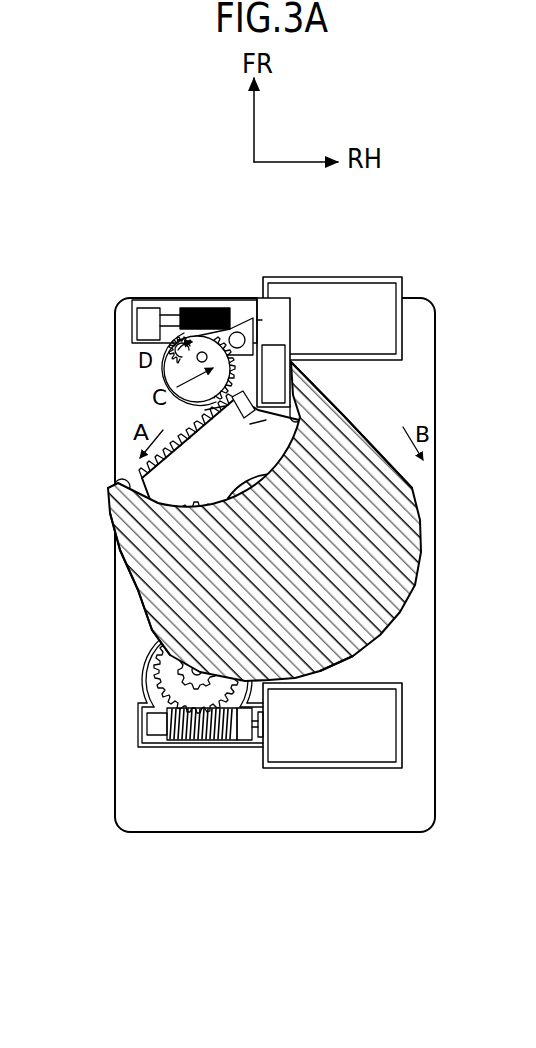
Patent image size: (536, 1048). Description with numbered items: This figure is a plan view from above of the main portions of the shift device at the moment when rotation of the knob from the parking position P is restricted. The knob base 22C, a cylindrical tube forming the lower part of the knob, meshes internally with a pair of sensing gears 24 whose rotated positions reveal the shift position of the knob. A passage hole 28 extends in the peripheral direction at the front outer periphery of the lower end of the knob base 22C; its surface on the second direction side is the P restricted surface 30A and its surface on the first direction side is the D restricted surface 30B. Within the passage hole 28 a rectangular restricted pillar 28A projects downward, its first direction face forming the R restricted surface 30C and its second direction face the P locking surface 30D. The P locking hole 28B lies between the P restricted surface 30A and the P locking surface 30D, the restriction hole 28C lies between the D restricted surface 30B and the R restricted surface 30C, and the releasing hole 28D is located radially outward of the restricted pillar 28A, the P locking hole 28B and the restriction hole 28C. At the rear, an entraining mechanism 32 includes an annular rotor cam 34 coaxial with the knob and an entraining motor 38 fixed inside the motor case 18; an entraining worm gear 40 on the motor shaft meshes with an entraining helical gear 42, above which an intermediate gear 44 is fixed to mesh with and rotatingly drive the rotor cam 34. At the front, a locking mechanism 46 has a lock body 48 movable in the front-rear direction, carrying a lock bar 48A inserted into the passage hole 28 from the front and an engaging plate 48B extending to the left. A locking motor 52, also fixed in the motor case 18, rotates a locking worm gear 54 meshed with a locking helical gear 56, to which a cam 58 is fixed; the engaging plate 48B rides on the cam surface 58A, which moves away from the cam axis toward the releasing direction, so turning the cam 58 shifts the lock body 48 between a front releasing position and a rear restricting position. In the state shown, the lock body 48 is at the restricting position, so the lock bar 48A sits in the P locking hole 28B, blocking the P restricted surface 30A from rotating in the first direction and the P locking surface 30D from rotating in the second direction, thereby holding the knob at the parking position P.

The motor case 18 is at (285, 832).
The locking motor 52 is at (380, 290).
The entraining motor 38 is at (360, 745).
The entraining mechanism 32 is at (167, 721).
The entraining worm gear 40 is at (185, 747).
The entraining helical gear 42 is at (160, 660).
The intermediate gear 44 is at (185, 683).
The P restricted surface 30A is at (221, 484).
The D restricted surface 30B is at (114, 487).
The R restricted surface 30C is at (240, 416).
The P locking surface 30D is at (296, 420).
The rotor cam 34 is at (150, 472).
The sensing gears 24 is at (198, 502).
The passage hole 28 is at (238, 521).
The restricted pillar 28A is at (258, 428).
The P locking hole 28B is at (295, 420).
The restriction hole 28C is at (215, 410).
The releasing hole 28D is at (292, 380).
The knob base 22C is at (136, 594).
The P position P is at (390, 628).
The lock body 48 is at (291, 313).
The lock bar 48A is at (280, 356).
The engaging plate 48B is at (250, 308).
The locking mechanism 46 is at (160, 293).
The locking worm gear 54 is at (190, 305).
The locking helical gear 56 is at (155, 312).
The cam 58 is at (163, 380).
The cam surface 58A is at (162, 388).